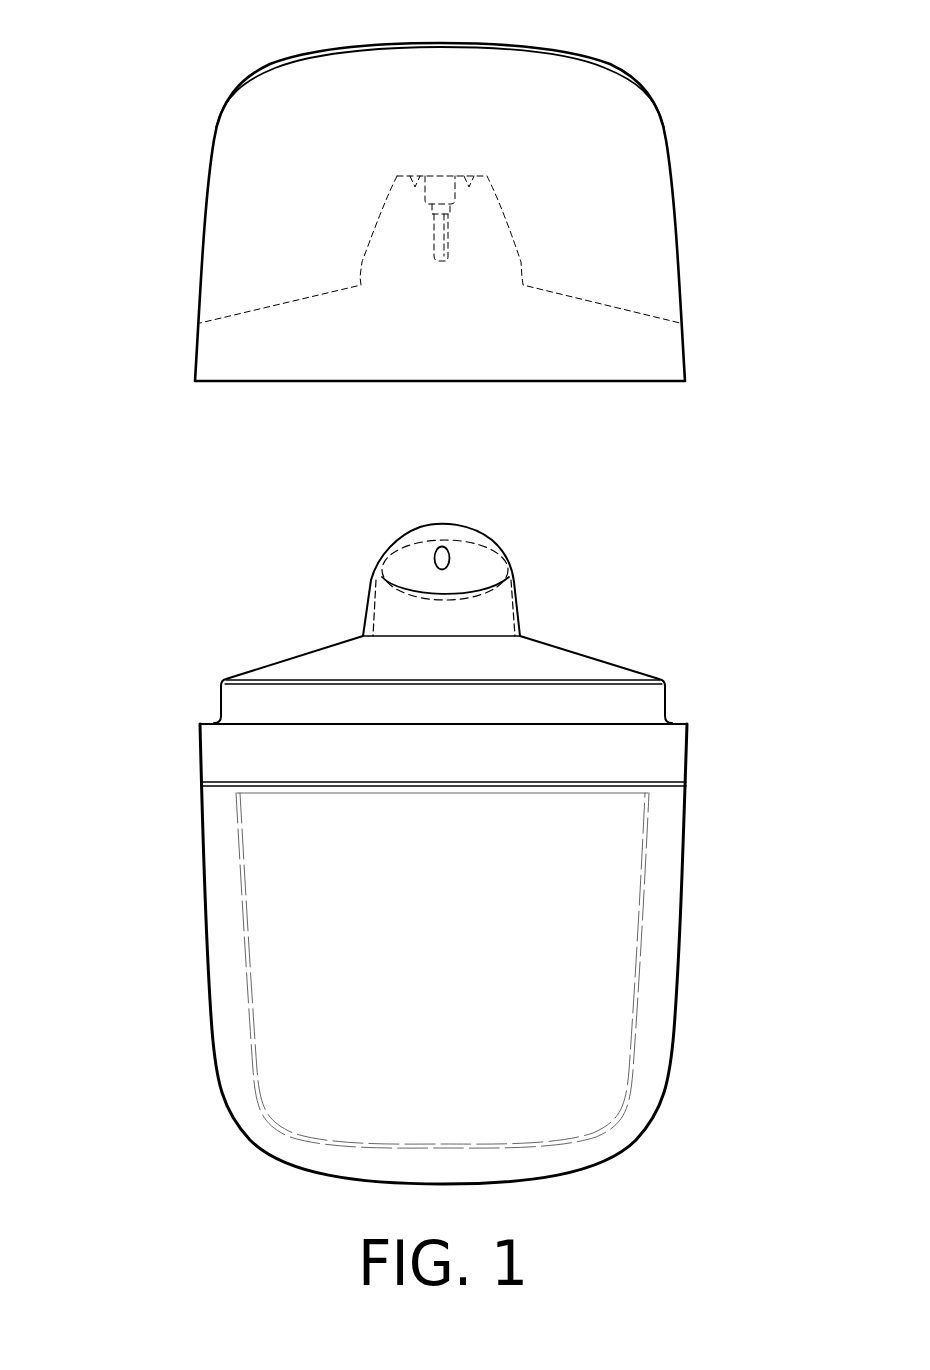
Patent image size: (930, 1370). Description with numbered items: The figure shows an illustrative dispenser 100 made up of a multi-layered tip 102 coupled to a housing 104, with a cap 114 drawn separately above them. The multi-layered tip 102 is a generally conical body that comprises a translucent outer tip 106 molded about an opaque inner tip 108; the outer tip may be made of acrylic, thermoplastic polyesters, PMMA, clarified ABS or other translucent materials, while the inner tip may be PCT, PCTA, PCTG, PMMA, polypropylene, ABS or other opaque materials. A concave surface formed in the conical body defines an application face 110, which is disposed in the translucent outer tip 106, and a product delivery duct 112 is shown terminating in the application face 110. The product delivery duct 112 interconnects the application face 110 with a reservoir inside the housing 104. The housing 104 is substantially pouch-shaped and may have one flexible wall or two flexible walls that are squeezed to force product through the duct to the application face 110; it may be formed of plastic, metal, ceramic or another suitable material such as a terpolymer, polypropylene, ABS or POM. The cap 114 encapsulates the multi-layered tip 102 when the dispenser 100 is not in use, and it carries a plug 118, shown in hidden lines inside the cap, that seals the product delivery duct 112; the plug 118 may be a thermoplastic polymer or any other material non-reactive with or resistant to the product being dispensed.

The dispenser 100 is at (133, 20).
The multi-layered tip 102 is at (402, 507).
The housing 104 is at (674, 659).
The translucent outer tip 106 is at (511, 568).
The opaque inner tip 108 is at (511, 605).
The application face 110 is at (425, 542).
The product delivery duct 112 is at (434, 558).
The cap 114 is at (645, 61).
The plug 118 is at (443, 262).